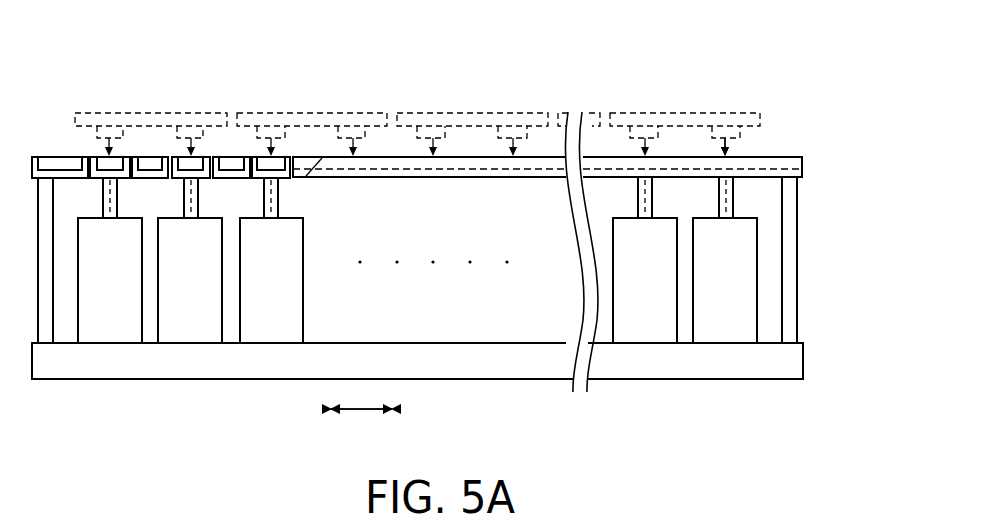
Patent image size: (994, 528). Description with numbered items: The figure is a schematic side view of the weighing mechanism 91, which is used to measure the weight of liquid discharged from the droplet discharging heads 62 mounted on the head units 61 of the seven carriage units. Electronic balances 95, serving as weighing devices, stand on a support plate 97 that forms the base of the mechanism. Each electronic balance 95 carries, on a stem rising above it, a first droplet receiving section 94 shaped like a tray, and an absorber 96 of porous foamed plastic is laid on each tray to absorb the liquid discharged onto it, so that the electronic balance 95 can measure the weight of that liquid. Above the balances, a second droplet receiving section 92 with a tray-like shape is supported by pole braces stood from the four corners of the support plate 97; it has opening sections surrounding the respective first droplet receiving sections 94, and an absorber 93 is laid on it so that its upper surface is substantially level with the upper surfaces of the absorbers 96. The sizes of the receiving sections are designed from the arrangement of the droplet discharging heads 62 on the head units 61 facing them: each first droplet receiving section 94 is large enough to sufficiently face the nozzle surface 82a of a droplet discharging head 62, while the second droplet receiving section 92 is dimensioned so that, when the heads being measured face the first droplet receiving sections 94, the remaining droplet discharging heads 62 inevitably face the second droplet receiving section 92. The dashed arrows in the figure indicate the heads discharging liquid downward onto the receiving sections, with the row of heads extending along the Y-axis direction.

The weighing mechanism 91 is at (766, 81).
The second droplet receiving section 92 is at (802, 163).
The absorber 93 is at (306, 159).
The first droplet receiving section 94 is at (93, 157).
The electronic balance 95 is at (110, 322).
The absorber 96 is at (103, 157).
The support plate 97 is at (803, 358).
The head unit 61 is at (633, 113).
The droplet discharging head 62 is at (431, 127).
The nozzle surface 82a is at (739, 147).